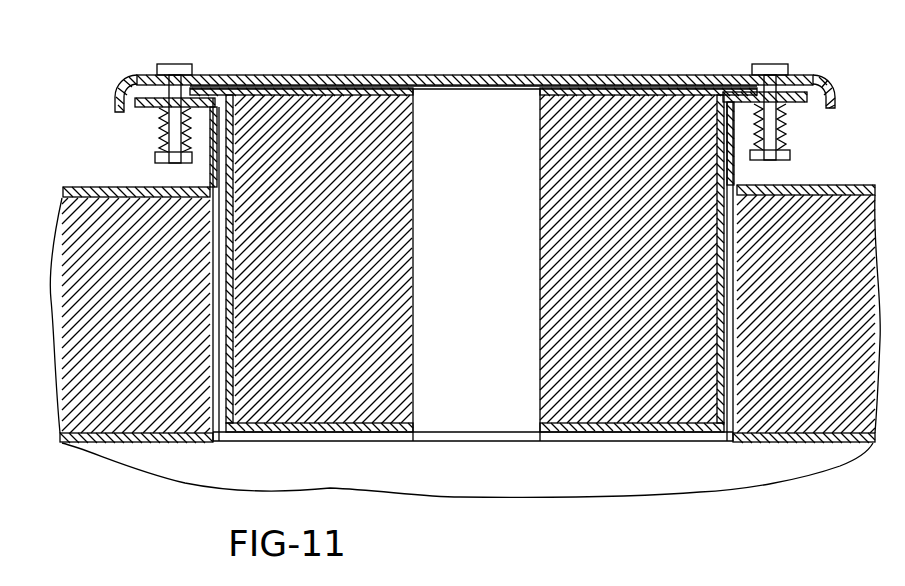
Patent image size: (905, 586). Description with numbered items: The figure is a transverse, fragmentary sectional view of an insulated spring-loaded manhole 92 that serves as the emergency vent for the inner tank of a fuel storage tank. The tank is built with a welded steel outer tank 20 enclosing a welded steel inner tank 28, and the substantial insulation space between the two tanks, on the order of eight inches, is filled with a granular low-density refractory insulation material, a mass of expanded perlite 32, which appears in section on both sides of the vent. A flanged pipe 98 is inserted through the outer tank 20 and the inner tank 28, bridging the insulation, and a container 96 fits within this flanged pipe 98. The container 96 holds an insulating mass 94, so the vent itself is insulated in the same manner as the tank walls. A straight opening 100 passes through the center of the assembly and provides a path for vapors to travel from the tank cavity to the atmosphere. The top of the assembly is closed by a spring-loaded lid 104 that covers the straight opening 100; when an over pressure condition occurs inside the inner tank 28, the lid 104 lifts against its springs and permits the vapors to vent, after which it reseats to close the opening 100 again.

The outer tank 20 is at (104, 186).
The inner tank 28 is at (72, 428).
The expanded perlite 32 is at (90, 356).
The spring-loaded manhole 92 is at (323, 32).
The insulating mass 94 is at (272, 410).
The container 96 is at (233, 293).
The flanged pipe 98 is at (210, 183).
The straight opening 100 is at (478, 291).
The spring-loaded lid 104 is at (377, 74).